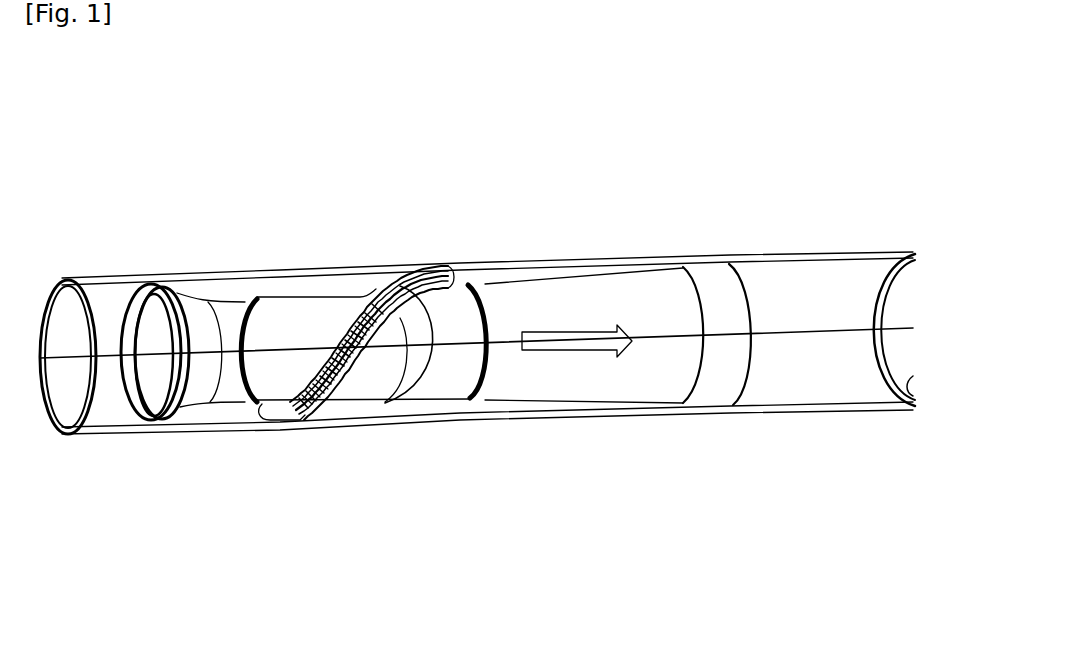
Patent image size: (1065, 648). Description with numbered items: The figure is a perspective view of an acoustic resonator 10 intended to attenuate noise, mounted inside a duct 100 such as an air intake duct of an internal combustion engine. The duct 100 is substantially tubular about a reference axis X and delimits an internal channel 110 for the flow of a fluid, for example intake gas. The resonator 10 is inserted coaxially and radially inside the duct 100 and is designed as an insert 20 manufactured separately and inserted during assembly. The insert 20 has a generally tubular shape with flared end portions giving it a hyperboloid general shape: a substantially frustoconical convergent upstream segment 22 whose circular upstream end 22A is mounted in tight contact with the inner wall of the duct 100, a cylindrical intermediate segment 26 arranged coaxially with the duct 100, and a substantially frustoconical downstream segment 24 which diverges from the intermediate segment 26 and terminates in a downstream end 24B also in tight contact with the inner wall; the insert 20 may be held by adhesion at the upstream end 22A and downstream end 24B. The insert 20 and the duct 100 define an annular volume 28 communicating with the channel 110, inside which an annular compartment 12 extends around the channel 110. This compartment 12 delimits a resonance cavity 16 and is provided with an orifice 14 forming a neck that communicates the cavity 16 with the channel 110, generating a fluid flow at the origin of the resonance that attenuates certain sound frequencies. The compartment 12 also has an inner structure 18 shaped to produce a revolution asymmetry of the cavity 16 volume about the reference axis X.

The duct 100 is at (636, 258).
The internal channel 110 is at (60, 303).
The acoustic resonator 10 is at (590, 320).
The annular compartment 12 is at (455, 405).
The orifice 14 is at (403, 278).
The resonance cavity 16 is at (290, 422).
The inner structure 18 is at (333, 415).
The insert 20 is at (389, 397).
The upstream segment 22 is at (200, 408).
The upstream end 22A is at (130, 440).
The downstream segment 24 is at (653, 413).
The downstream end 24B is at (752, 258).
The intermediate segment 26 is at (263, 297).
The annular volume 28 is at (293, 296).
The reference axis X is at (833, 327).